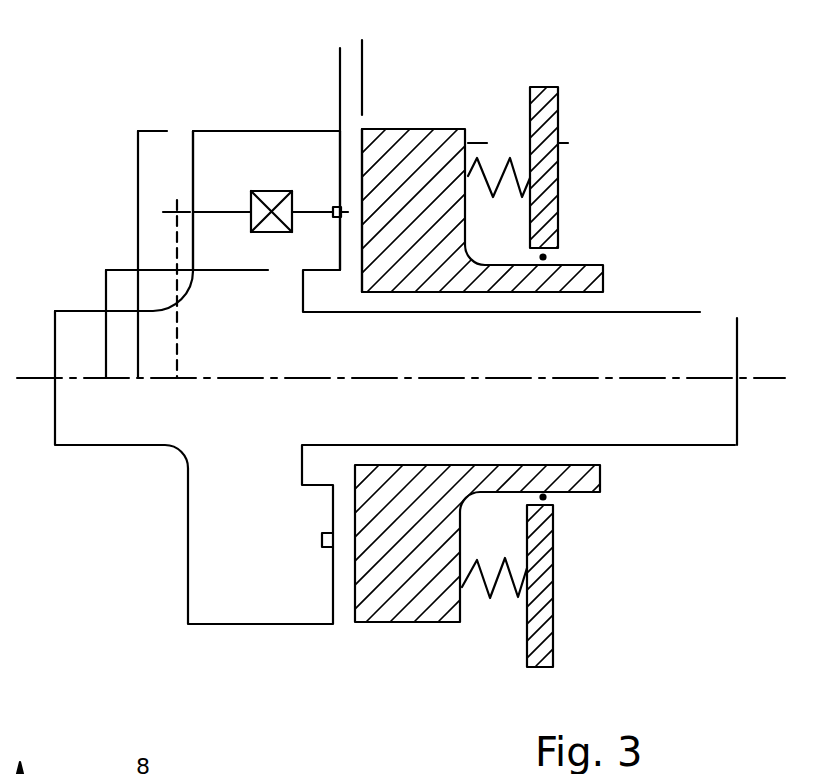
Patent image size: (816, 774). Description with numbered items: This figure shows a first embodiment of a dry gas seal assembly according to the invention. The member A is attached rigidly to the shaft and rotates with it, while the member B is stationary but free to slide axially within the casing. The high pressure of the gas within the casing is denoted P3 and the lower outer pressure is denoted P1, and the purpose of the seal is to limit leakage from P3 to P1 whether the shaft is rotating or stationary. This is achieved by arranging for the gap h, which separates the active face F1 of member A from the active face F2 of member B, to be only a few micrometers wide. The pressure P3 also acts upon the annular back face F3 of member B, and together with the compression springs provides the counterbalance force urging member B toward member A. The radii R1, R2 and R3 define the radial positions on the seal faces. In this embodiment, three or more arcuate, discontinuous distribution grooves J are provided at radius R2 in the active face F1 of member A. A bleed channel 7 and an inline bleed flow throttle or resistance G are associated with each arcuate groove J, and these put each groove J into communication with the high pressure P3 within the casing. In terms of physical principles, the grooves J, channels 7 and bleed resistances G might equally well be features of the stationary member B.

The bleed channel 7 is at (218, 205).
The member A is at (225, 612).
The member B is at (409, 606).
The bleed flow throttle G is at (280, 232).
The distribution groove J is at (349, 212).
The gap h is at (272, 62).
The radius R1 is at (169, 324).
The radius R2 is at (187, 289).
The radius R3 is at (135, 254).
The outer pressure P1 is at (671, 135).
The high pressure P3 is at (217, 33).
The active face of member A F1 is at (350, 600).
The active face of member B F2 is at (352, 600).
The annular back face F3 is at (470, 143).